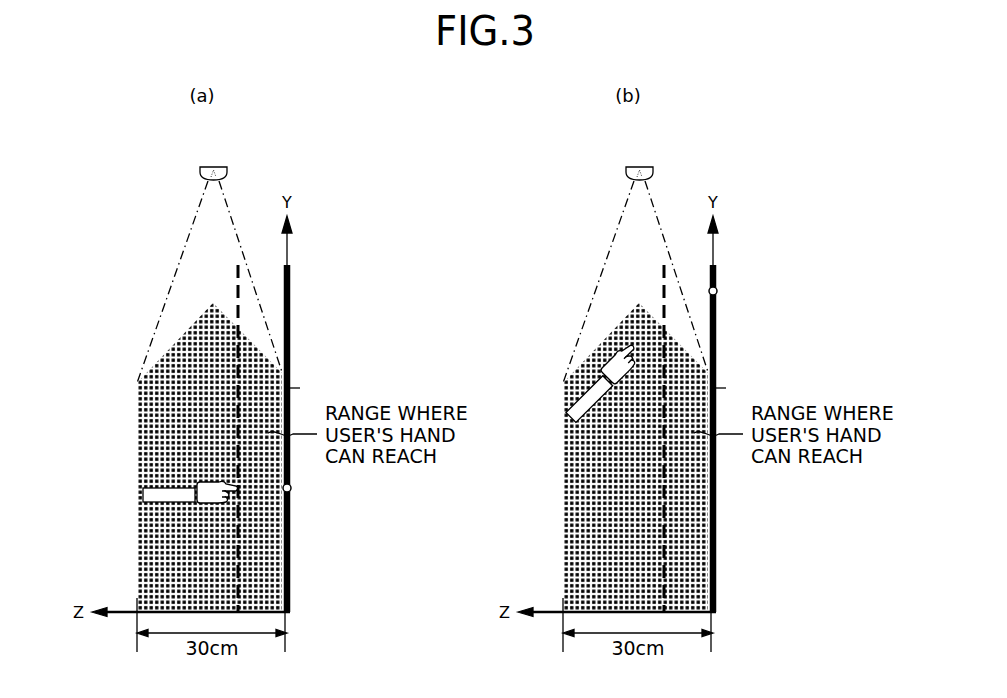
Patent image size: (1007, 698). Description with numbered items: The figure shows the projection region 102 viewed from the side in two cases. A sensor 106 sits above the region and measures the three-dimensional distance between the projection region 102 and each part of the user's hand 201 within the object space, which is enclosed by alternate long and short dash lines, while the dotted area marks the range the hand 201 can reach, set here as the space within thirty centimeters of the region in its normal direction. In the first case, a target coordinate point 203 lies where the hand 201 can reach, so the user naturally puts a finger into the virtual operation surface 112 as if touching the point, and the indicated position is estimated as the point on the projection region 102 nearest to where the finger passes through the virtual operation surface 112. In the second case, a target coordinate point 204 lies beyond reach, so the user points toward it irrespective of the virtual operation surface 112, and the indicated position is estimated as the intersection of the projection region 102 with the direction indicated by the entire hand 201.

The projection region 102 is at (291, 531).
The sensor 106 is at (213, 167).
The virtual operation surface 112 is at (240, 565).
The user's hand 201 is at (143, 493).
The target coordinate point 203 is at (292, 488).
The target coordinate point 204 is at (718, 291).